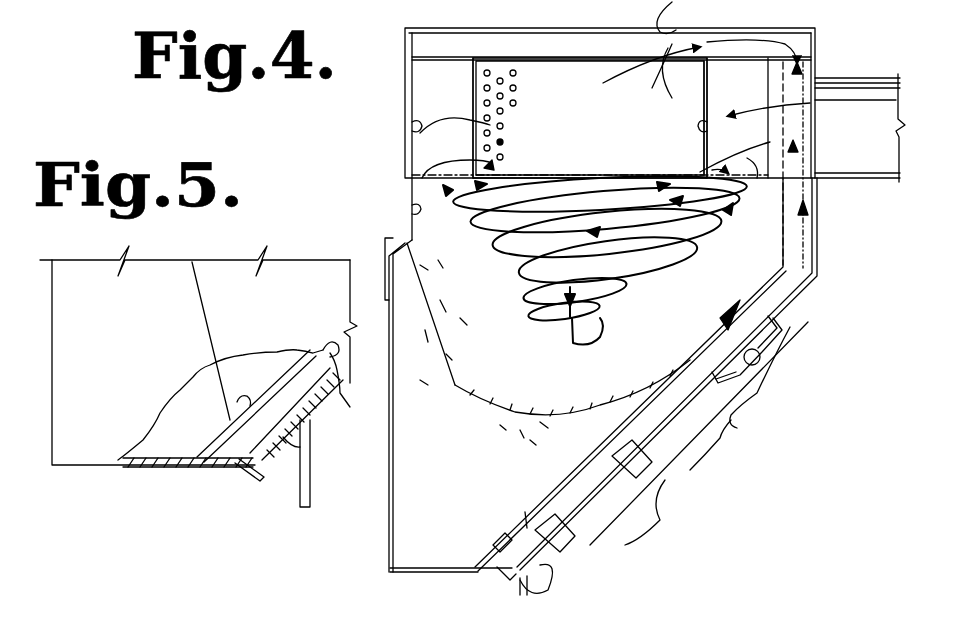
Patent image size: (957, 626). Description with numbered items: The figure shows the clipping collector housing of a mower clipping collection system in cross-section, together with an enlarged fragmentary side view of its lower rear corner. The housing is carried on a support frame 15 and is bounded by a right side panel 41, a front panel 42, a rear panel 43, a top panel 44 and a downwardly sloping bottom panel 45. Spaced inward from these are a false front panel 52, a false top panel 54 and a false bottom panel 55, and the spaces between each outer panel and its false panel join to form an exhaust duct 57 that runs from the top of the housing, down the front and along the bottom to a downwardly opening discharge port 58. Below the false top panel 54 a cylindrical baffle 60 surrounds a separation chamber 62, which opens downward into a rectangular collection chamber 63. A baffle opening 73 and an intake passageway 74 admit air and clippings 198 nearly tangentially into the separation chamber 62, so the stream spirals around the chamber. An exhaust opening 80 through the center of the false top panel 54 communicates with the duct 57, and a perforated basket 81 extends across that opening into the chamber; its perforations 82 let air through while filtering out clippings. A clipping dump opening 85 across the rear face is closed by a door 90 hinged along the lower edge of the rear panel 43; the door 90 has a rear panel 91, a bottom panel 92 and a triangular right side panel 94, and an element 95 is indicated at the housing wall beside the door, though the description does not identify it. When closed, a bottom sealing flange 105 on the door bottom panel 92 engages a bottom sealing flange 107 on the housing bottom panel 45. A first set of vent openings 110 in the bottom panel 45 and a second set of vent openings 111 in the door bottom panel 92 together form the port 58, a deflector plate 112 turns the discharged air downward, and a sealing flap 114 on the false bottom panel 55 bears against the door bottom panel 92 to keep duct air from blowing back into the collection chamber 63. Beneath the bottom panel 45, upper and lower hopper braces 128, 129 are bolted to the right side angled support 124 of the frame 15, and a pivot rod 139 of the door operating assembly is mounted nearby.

In FIG. 4, the support frame 15 is at (814, 326).
In FIG. 4, the right side panel 41 is at (256, 0).
In FIG. 5, the right side panel 41 is at (280, 304).
In FIG. 4, the front panel 42 is at (814, 54).
In FIG. 4, the rear panel 43 is at (406, 188).
In FIG. 4, the top wall 44 is at (600, 27).
In FIG. 4, the bottom panel 45 is at (809, 275).
In FIG. 5, the bottom panel 45 is at (336, 390).
In FIG. 4, the false front panel 52 is at (784, 216).
In FIG. 4, the false top panel 54 is at (406, 47).
In FIG. 4, the false bottom panel 55 is at (770, 282).
In FIG. 5, the false bottom panel 55 is at (293, 374).
In FIG. 4, the exhaust duct 57 is at (712, 336).
In FIG. 5, the exhaust duct 57 is at (323, 339).
In FIG. 4, the discharge port 58 is at (496, 572).
In FIG. 4, the baffle 60 is at (411, 127).
In FIG. 4, the separation chamber 62 is at (412, 80).
In FIG. 4, the collection chamber 63 is at (406, 211).
In FIG. 4, the baffle opening 73 is at (352, 0).
In FIG. 4, the intake passageway 74 is at (528, 0).
In FIG. 4, the exhaust opening 80 is at (537, 58).
In FIG. 4, the basket 81 is at (472, 76).
In FIG. 4, the perforations 82 is at (505, 142).
In FIG. 4, the clipping dump opening 85 is at (443, 386).
In FIG. 4, the door 90 is at (388, 573).
In FIG. 5, the door 90 is at (50, 467).
In FIG. 4, the door rear panel 91 is at (376, 484).
In FIG. 5, the door rear panel 91 is at (376, 490).
In FIG. 4, the door bottom panel 92 is at (400, 570).
In FIG. 5, the door bottom panel 92 is at (131, 470).
In FIG. 5, the right side panel of door 94 is at (64, 334).
In FIG. 4, the side panel 95 is at (386, 257).
In FIG. 4, the bottom sealing flange 105 is at (528, 580).
In FIG. 5, the bottom sealing flange 105 is at (252, 478).
In FIG. 4, the bottom sealing flange 107 is at (552, 576).
In FIG. 5, the bottom sealing flange 107 is at (272, 490).
In FIG. 5, the first set of vent openings 110 is at (308, 445).
In FIG. 5, the second set of vent openings 111 is at (215, 470).
In FIG. 4, the deflector plate 112 is at (512, 510).
In FIG. 5, the deflector plate 112 is at (302, 510).
In FIG. 4, the sealing flap 114 is at (493, 545).
In FIG. 5, the sealing flap 114 is at (209, 441).
In FIG. 4, the right side angled support 124 is at (697, 466).
In FIG. 4, the upper hopper brace 128 is at (740, 416).
In FIG. 4, the lower hopper brace 129 is at (648, 490).
In FIG. 4, the pivot rod 139 is at (762, 360).
In FIG. 4, the clippings 198 is at (526, 408).